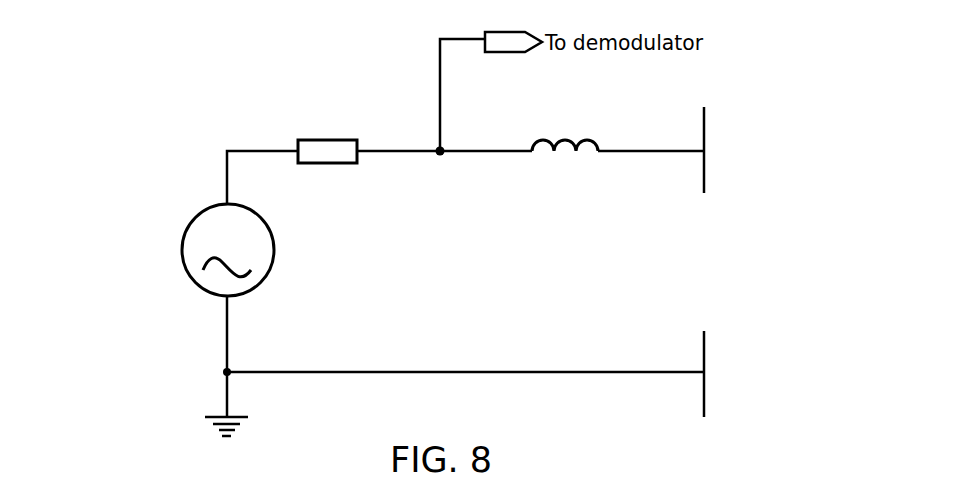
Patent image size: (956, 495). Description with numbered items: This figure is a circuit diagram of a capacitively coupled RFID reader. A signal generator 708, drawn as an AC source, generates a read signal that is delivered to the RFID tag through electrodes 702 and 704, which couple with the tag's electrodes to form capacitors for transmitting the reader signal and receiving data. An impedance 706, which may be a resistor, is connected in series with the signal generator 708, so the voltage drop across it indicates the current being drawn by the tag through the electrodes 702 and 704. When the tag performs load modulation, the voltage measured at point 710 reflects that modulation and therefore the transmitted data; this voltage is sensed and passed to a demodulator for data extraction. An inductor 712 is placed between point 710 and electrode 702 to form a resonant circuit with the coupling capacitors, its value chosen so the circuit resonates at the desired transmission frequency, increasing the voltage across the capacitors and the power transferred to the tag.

The electrode 702 is at (706, 133).
The electrode 704 is at (706, 355).
The impedance 706 is at (327, 139).
The signal generator 708 is at (183, 250).
The point 710 is at (441, 156).
The inductor 712 is at (545, 157).